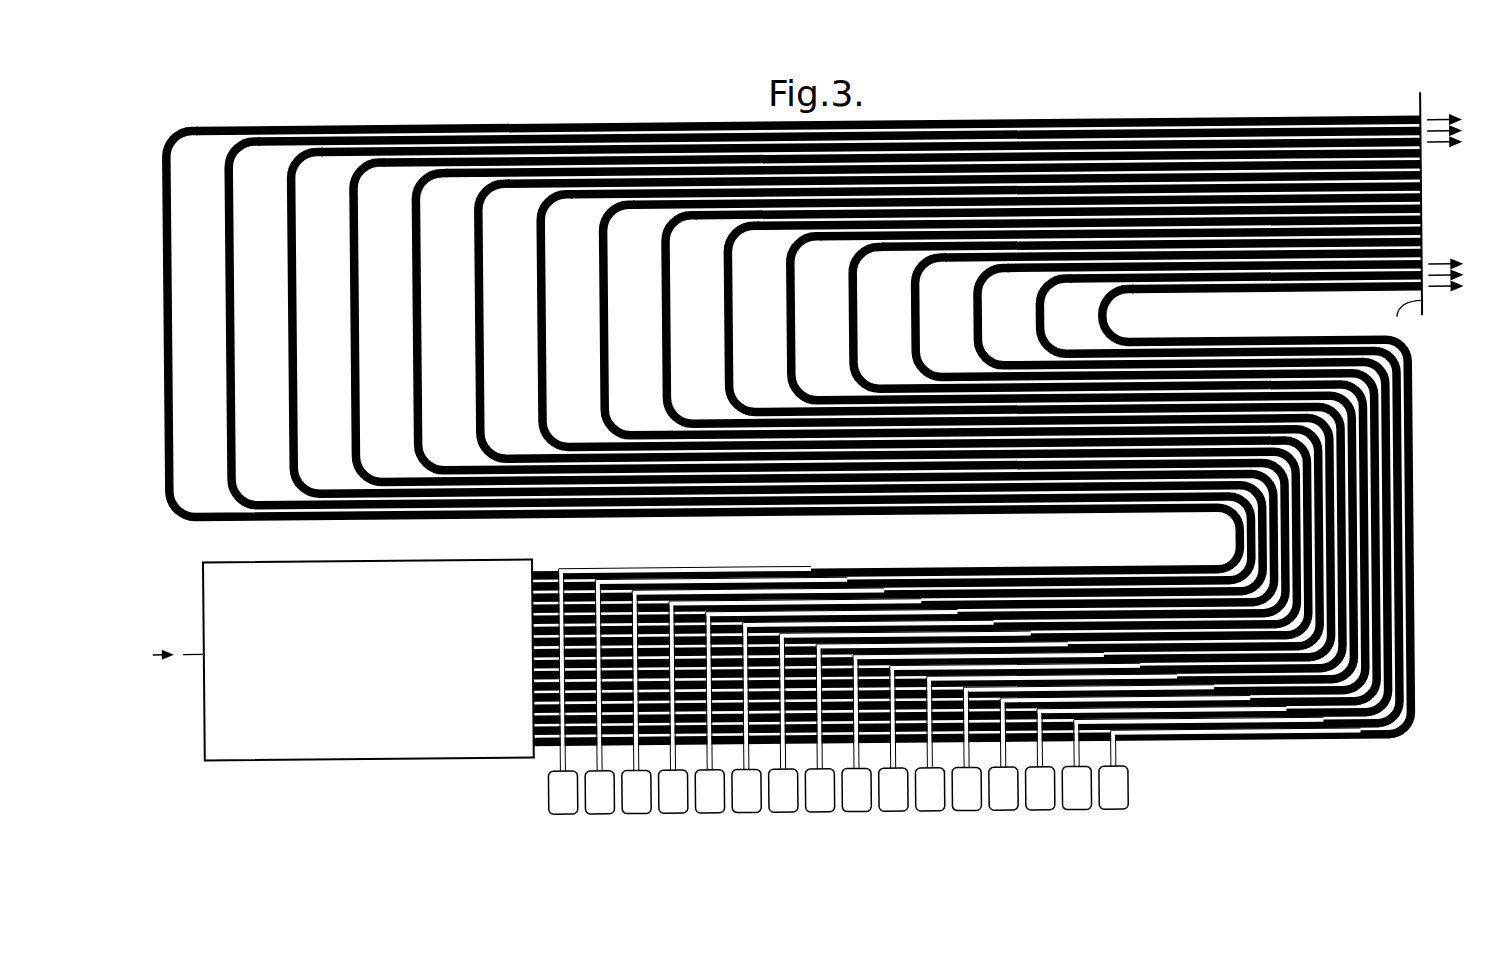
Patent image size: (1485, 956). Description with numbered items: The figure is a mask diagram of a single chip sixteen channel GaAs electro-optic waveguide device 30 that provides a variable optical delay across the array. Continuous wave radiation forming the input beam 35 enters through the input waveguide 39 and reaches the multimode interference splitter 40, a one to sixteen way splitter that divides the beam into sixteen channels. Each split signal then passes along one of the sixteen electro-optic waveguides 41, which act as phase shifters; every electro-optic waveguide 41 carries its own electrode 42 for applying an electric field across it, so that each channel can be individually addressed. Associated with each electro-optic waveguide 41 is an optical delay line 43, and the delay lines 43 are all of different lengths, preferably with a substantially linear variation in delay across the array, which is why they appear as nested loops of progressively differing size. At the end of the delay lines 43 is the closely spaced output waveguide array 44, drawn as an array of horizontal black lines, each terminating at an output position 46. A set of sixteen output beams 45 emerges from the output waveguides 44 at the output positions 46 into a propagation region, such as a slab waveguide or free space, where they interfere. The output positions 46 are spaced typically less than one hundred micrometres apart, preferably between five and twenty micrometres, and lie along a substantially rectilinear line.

The device 30 is at (811, 469).
The input beam 35 is at (155, 652).
The input waveguide 39 is at (190, 647).
The multimode interference splitter 40 is at (320, 773).
The electro-optic waveguides 41 is at (1240, 674).
The electrode 42 is at (559, 812).
The optical delay line 43 is at (226, 317).
The output waveguide array 44 is at (1249, 143).
The output beams 45 is at (1437, 124).
The output position 46 is at (1425, 211).